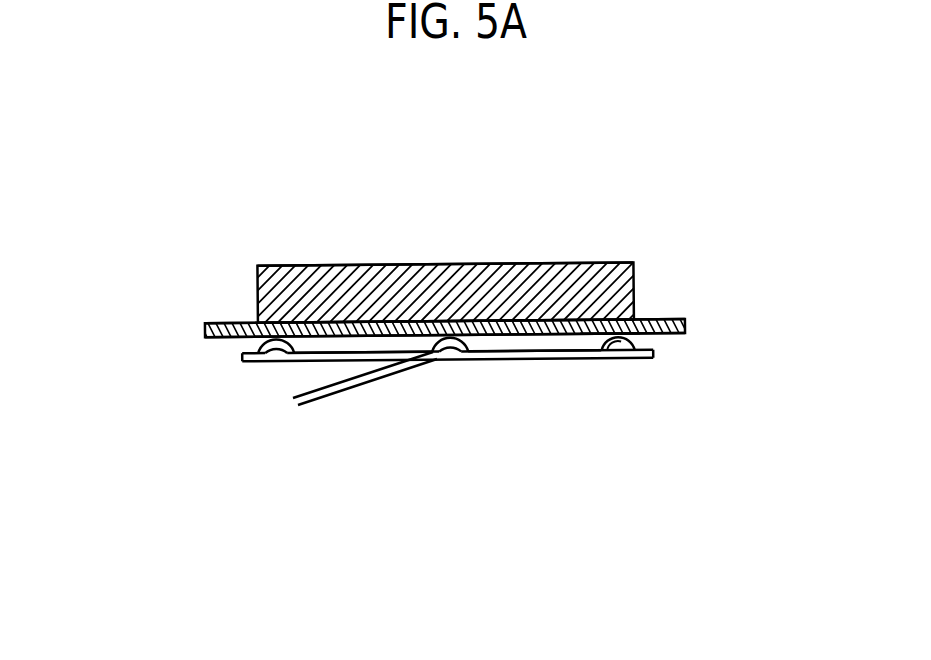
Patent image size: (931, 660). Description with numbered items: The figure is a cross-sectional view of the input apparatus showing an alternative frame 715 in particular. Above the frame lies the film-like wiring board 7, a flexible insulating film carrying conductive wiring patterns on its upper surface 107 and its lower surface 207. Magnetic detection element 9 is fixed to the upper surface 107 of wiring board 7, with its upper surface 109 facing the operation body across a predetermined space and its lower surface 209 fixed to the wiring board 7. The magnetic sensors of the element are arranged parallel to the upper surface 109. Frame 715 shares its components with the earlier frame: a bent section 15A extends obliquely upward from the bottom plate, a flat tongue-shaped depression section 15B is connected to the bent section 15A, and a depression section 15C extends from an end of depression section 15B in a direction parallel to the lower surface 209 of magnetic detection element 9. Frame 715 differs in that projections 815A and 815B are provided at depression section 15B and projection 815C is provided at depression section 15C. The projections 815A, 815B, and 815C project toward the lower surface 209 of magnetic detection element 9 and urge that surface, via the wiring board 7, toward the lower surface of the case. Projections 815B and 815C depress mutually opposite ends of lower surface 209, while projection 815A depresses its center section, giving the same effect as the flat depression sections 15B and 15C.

The magnetic detection element 9 is at (633, 265).
The wiring board 7 is at (687, 326).
The upper surface of magnetic detection element 109 is at (313, 264).
The upper surface of wiring board 107 is at (248, 320).
The lower surface of wiring board 207 is at (210, 340).
The lower surface of magnetic detection element 209 is at (601, 336).
The frame 715 is at (653, 353).
The projection 815C is at (253, 364).
The projection 815A is at (455, 352).
The projection 815B is at (633, 357).
The depression section 15C is at (310, 357).
The depression section 15B is at (540, 360).
The bent section 15A is at (375, 373).